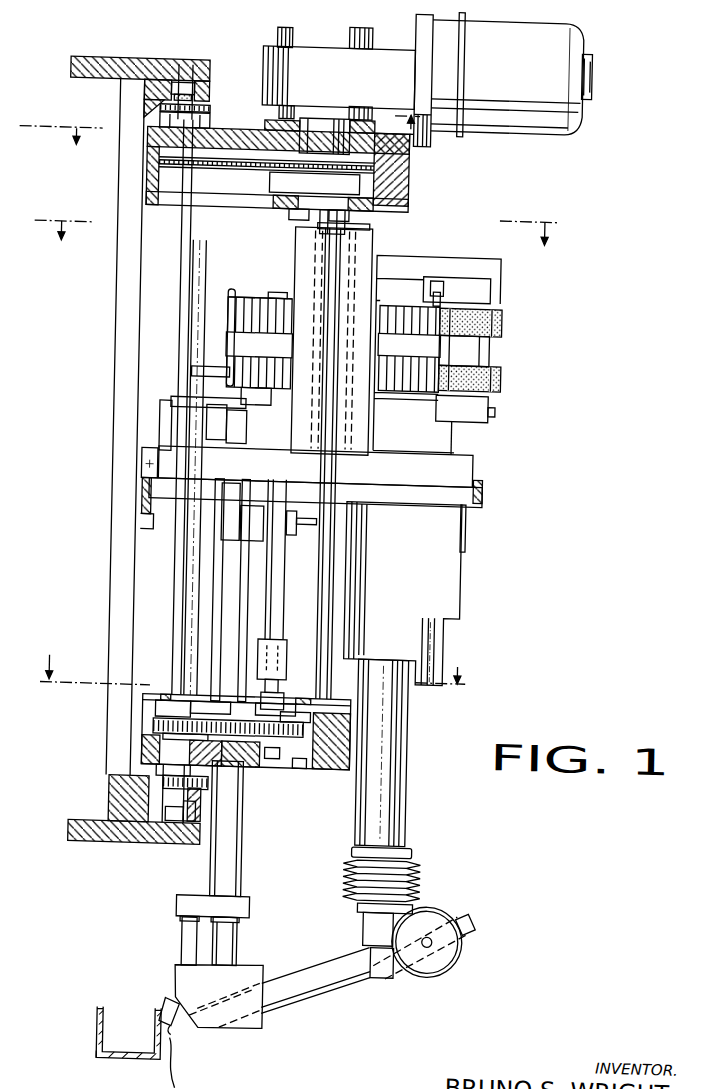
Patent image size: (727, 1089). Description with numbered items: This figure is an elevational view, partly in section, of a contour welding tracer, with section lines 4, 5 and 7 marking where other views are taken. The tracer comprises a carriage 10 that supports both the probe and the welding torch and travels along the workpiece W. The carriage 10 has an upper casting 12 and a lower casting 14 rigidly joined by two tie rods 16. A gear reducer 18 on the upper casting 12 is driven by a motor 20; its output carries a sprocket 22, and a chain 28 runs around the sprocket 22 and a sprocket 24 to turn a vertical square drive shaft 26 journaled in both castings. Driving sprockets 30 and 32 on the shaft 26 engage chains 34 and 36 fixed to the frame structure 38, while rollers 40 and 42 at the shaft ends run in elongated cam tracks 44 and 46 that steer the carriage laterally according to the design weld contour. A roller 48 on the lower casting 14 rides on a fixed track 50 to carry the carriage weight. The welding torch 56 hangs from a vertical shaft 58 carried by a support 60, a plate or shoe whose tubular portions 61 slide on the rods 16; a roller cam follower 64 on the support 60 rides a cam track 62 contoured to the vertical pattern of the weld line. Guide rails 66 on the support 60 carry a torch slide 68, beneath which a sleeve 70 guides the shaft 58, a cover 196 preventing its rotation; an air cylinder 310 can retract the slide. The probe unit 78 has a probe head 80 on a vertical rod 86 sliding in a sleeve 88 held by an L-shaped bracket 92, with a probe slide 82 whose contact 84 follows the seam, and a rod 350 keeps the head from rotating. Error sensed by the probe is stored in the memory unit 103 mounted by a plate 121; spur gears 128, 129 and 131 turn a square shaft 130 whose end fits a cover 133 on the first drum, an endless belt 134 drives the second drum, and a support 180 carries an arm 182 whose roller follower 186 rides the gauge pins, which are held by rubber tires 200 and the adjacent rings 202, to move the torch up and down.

The section line 4- 4 is at (219, 116).
The section line 5- 5 is at (300, 232).
The section line 7- 7 is at (254, 673).
The carriage 10 is at (441, 186).
The upper casting 12 is at (402, 195).
The lower casting 14 is at (335, 766).
The tie rods 16 is at (337, 566).
The gear reducer 18 is at (339, 74).
The motor 20 is at (503, 81).
The sprocket 22 is at (314, 183).
The sprocket 24 is at (186, 214).
The square drive shaft 26 is at (201, 240).
The chain 28 is at (226, 172).
The driving sprocket 30 is at (201, 113).
The driving sprocket 32 is at (212, 806).
The chain 34 is at (165, 86).
The chain 36 is at (153, 788).
The fixed frame structure 38 is at (112, 104).
The roller 40 is at (202, 95).
The roller 42 is at (176, 820).
The cam track 44 is at (181, 88).
The cam track 46 is at (185, 822).
The roller 48 is at (214, 786).
The fixed track 50 is at (203, 822).
The welding torch 56 is at (318, 997).
The vertical shaft 58 is at (401, 975).
The support 60 is at (472, 466).
The tubular portions 61 is at (290, 242).
The cam track 62 is at (142, 510).
The roller cam follower 64 is at (141, 462).
The guide rails 66 is at (482, 488).
The torch slide 68 is at (467, 504).
The sleeve 70 is at (412, 782).
The probe unit 78 is at (178, 963).
The probe head 80 is at (240, 978).
The probe slide 82 is at (184, 1040).
The contact 84 is at (168, 1038).
The vertical rod 86 is at (243, 950).
The sleeve 88 is at (249, 882).
The L-shaped bracket 92 is at (158, 410).
The memory unit 103 is at (220, 326).
The plate 121 is at (452, 437).
The spur gear 128 is at (226, 293).
The spur gear 129 is at (276, 762).
The square shaft 130 is at (284, 608).
The spur gear 131 is at (306, 771).
The cover 133 is at (238, 300).
The endless belt 134 is at (333, 350).
The support 180 is at (394, 255).
The arm 182 is at (432, 279).
The roller follower 186 is at (437, 292).
The cover 196 is at (466, 548).
The rubber tires 200 is at (486, 354).
The friction ring 202 is at (498, 326).
The air cylinder 310 is at (250, 548).
The rod 350 is at (196, 953).
The workpiece W is at (108, 1054).